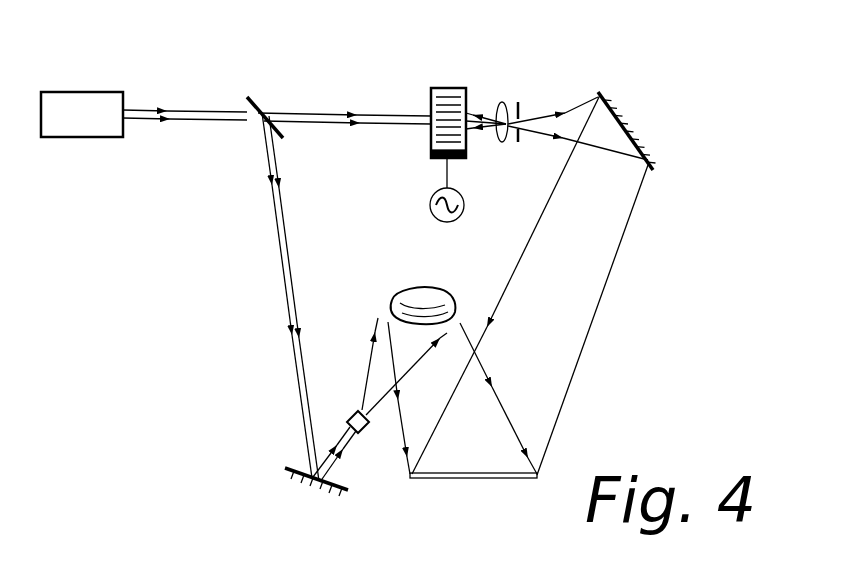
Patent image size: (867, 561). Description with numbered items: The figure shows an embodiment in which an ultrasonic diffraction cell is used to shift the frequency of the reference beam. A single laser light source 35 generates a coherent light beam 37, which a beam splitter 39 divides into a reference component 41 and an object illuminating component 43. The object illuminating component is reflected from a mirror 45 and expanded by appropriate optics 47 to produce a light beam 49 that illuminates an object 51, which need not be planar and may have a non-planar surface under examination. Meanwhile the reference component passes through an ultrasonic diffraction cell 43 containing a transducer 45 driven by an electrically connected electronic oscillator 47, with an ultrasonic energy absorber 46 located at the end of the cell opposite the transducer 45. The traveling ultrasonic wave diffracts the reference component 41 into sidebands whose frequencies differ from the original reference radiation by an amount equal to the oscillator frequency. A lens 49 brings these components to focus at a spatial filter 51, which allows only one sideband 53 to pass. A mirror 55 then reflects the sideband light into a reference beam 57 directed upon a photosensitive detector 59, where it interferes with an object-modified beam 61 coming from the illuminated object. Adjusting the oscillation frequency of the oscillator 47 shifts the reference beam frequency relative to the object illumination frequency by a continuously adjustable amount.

The laser light source 35 is at (62, 102).
The coherent light beam 37 is at (188, 112).
The beam splitter 39 is at (253, 97).
The reference component 41 is at (315, 113).
The object illuminating component / ultrasonic diffraction cell 43 is at (280, 245).
The mirror / transducer 45 is at (437, 150).
The ultrasonic energy absorber 46 is at (443, 88).
The optics / electronic oscillator 47 is at (455, 217).
The light beam / lens 49 is at (504, 103).
The object / spatial filter 51 is at (520, 108).
The sideband 53 is at (543, 135).
The mirror 55 is at (655, 165).
The reference beam 57 is at (598, 277).
The photosensitive detector 59 is at (503, 479).
The object-modified beam 61 is at (406, 428).